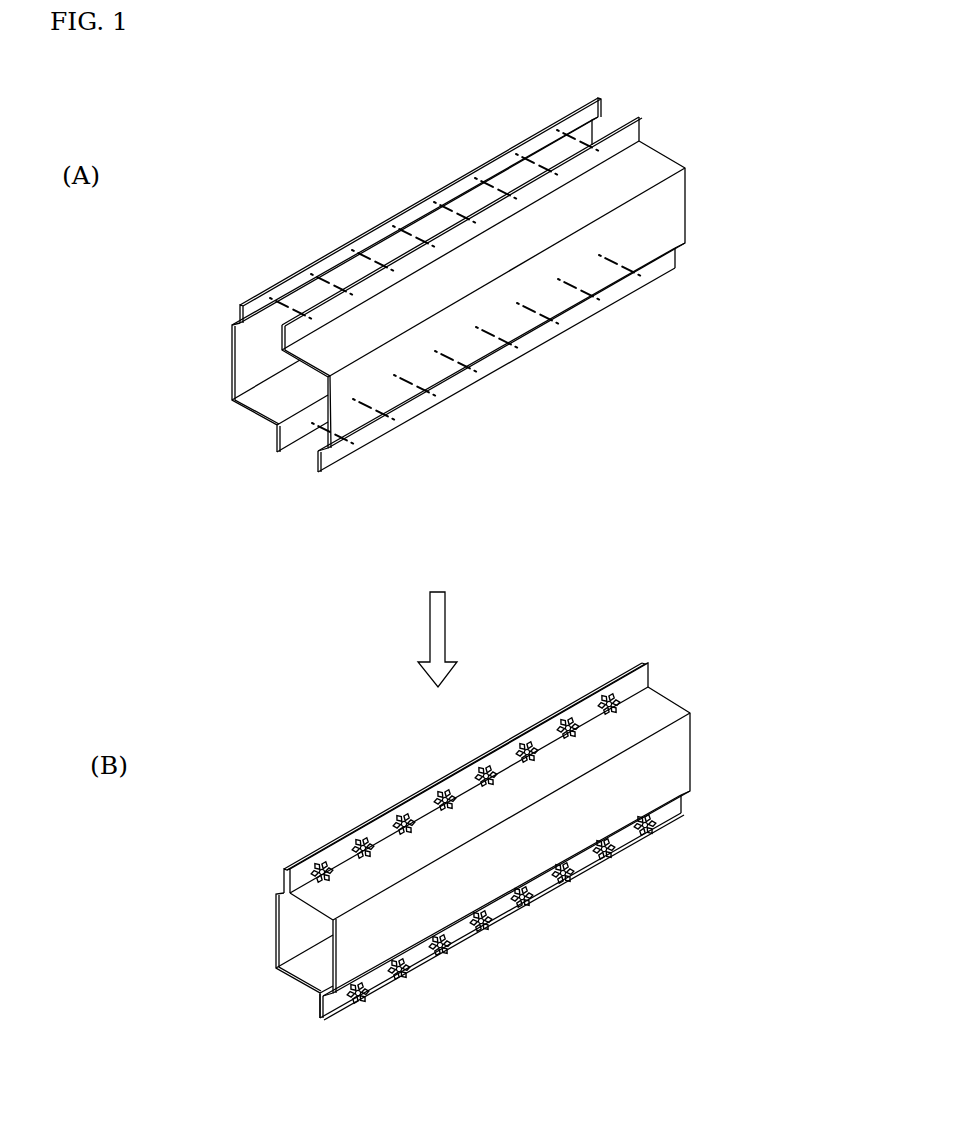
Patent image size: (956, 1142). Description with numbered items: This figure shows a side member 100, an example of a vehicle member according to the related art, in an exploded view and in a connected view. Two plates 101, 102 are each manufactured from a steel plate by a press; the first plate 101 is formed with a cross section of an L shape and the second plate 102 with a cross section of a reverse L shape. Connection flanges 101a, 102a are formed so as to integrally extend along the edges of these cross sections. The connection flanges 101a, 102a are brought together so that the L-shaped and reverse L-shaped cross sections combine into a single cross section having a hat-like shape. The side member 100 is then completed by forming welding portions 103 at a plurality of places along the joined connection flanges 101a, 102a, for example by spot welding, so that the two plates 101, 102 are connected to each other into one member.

The side member 100 is at (236, 994).
The plate 101 is at (228, 393).
The connection flange 101a is at (320, 256).
The plate 102 is at (305, 383).
The connection flange 102a is at (338, 457).
The welding portions 103 is at (678, 816).